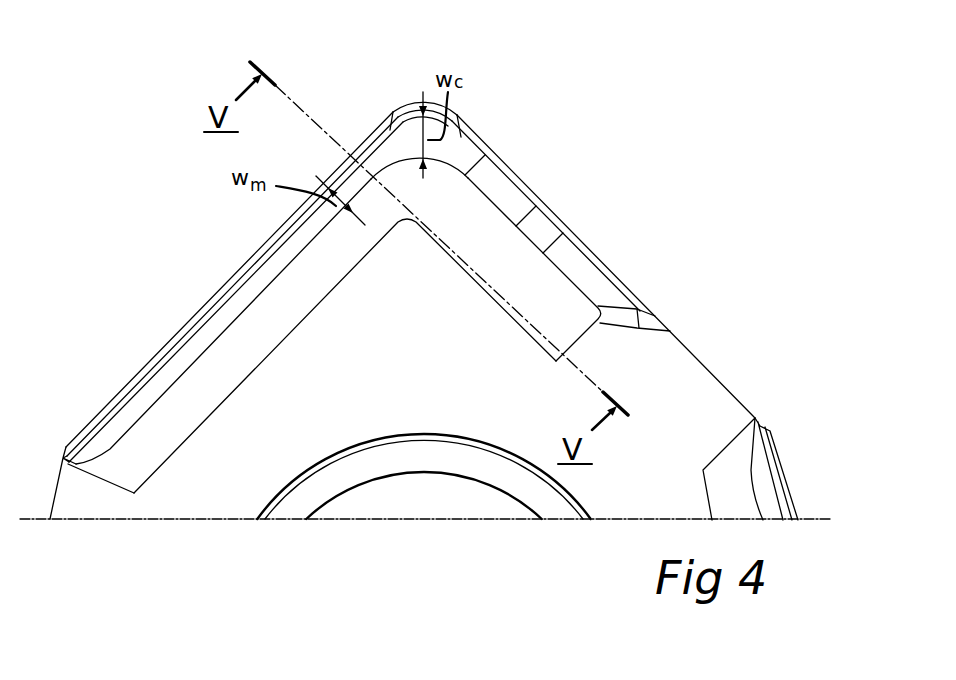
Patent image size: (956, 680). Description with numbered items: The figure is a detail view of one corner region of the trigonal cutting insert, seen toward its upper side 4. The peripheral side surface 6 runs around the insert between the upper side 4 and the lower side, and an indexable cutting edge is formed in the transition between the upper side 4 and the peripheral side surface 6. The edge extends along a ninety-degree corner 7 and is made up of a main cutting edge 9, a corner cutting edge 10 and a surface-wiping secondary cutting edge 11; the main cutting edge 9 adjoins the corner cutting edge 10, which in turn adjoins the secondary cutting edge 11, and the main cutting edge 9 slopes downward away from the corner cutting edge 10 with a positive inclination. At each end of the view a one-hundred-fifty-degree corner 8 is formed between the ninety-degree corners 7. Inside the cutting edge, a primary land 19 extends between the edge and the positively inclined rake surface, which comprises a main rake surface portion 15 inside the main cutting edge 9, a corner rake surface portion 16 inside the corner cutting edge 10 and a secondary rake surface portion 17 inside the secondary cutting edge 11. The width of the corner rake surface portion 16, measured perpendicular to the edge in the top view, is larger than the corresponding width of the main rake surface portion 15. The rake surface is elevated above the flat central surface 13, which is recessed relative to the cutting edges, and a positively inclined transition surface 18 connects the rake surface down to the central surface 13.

The upper side 4 is at (672, 376).
The peripheral side surface 6 is at (135, 384).
The 90° corner 7 is at (417, 103).
The 150° corner 8 is at (63, 458).
The main cutting edge 9 is at (224, 298).
The corner cutting edge 10 is at (458, 114).
The surface-wiping secondary cutting edge 11 is at (530, 196).
The central surface 13 is at (437, 409).
The main rake surface portion 15 is at (287, 250).
The corner rake surface portion 16 is at (410, 134).
The secondary rake surface portion 17 is at (483, 170).
The transition surface 18 is at (313, 309).
The primary land 19 is at (191, 338).